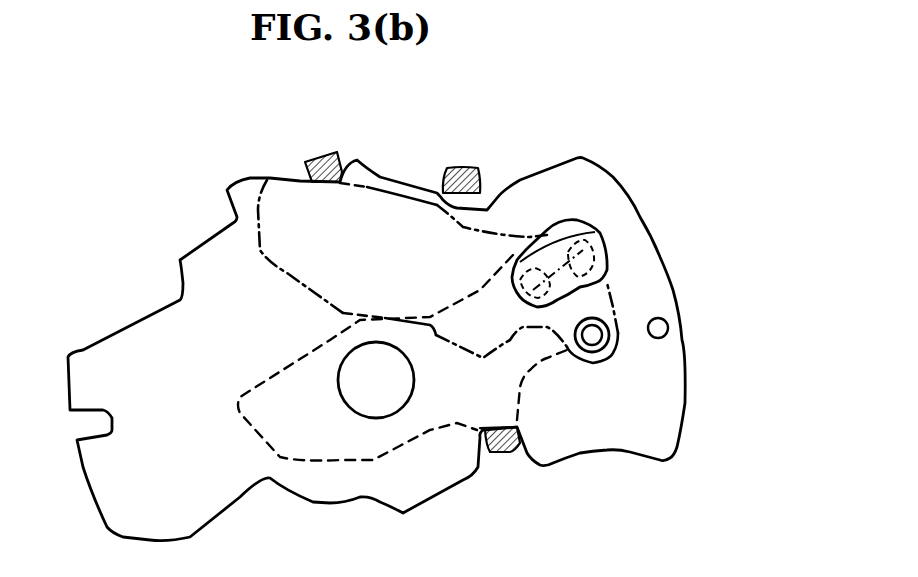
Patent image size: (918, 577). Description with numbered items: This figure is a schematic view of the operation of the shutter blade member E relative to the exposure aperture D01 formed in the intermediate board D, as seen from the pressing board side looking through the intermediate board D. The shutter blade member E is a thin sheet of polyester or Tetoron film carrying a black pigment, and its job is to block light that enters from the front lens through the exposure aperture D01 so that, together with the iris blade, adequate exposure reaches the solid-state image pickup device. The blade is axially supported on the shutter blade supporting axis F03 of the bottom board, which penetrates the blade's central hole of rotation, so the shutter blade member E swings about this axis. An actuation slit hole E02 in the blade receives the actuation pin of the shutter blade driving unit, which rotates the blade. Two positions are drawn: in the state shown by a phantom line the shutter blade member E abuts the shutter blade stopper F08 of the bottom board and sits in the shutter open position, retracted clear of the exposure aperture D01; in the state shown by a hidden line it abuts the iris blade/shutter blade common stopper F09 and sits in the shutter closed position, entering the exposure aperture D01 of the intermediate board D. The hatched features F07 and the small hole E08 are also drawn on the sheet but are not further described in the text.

The intermediate board D is at (177, 277).
The shutter blade member E is at (362, 247).
The exposure aperture D01 is at (375, 405).
The actuation slit hole E02 is at (577, 255).
The small hole E08 is at (662, 327).
The shutter blade supporting axis F03 is at (595, 333).
The weld portion F07 is at (317, 157).
The shutter blade stopper F08 is at (480, 168).
The iris blade/shutter blade common stopper F09 is at (503, 452).